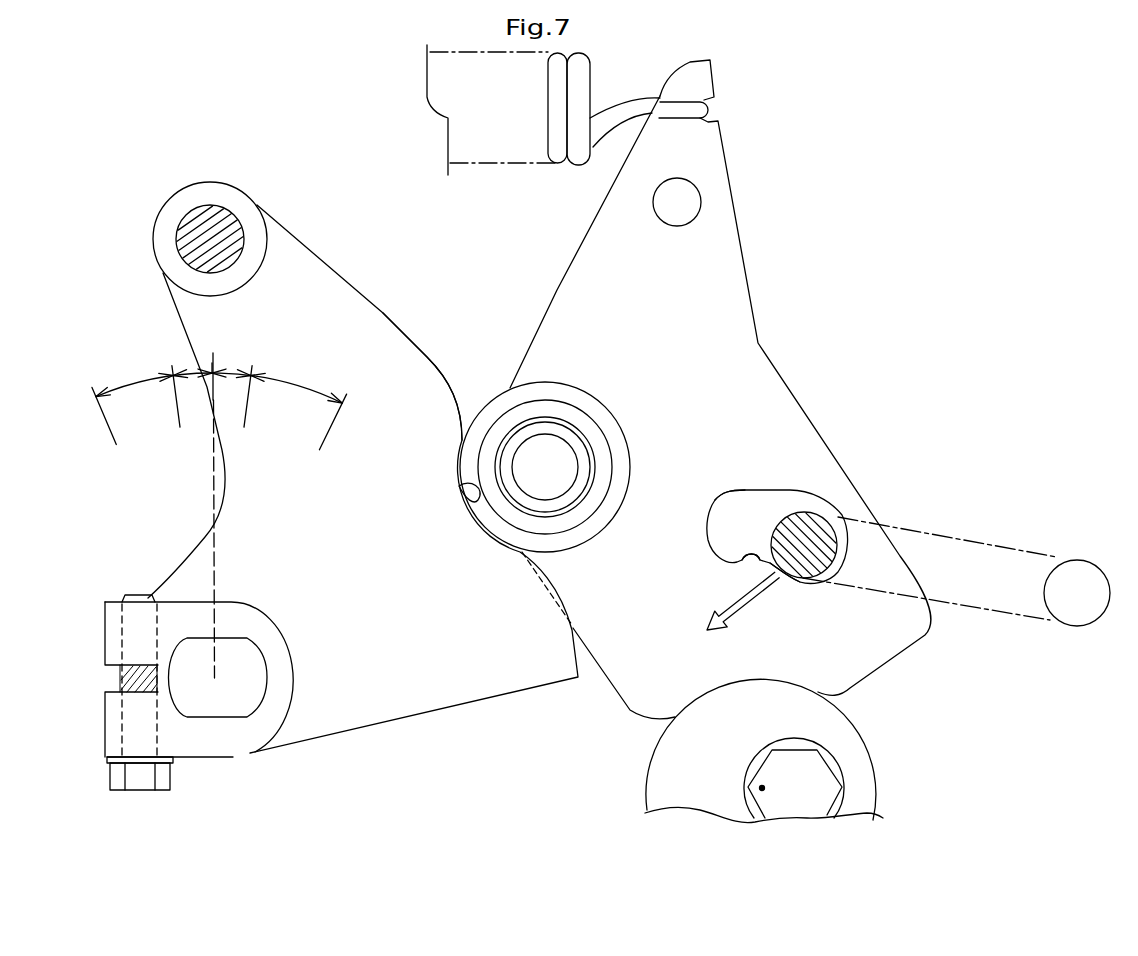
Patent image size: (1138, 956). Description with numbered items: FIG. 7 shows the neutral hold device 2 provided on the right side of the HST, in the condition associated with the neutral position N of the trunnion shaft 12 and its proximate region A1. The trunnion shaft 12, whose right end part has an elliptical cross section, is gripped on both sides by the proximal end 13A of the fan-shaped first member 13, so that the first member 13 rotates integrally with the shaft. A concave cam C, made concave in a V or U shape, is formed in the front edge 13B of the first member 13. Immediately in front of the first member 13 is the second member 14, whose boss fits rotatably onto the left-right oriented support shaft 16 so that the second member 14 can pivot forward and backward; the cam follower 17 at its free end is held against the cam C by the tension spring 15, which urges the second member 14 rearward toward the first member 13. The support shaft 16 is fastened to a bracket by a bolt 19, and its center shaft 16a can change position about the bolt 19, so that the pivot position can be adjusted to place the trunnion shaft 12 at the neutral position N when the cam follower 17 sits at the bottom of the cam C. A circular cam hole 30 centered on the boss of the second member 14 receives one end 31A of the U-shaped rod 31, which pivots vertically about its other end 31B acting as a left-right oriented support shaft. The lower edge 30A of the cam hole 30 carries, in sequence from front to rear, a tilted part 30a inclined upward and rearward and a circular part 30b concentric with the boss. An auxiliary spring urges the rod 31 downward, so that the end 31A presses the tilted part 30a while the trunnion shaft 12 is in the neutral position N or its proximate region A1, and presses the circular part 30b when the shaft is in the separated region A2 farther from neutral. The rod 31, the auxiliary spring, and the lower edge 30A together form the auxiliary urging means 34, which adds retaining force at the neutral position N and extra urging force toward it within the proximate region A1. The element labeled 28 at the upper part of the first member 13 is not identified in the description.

The neutral hold device 2 is at (872, 118).
The trunnion shaft 12 is at (264, 680).
The first member 13 is at (321, 260).
The proximal end 13A is at (208, 748).
The front edge 13B is at (382, 314).
The second member 14 is at (733, 240).
The spring 15 is at (567, 168).
The support shaft 16 is at (852, 733).
The center shaft 16a is at (745, 788).
The cam follower 17 is at (580, 388).
The bolt 19 is at (830, 786).
The support shaft 28 is at (193, 221).
The cam hole 30 is at (752, 498).
The lower edge 30A is at (733, 556).
The tilted part 30a is at (805, 584).
The circular part 30b is at (752, 559).
The rod 31 is at (960, 605).
The one end of the rod 31A is at (804, 513).
The other end of the rod 31B is at (1080, 563).
The auxiliary urging means 34 is at (898, 487).
The concave cam C is at (464, 506).
The neutral position N is at (213, 502).
The proximate region A1 is at (188, 372).
The separated region A2 is at (136, 384).